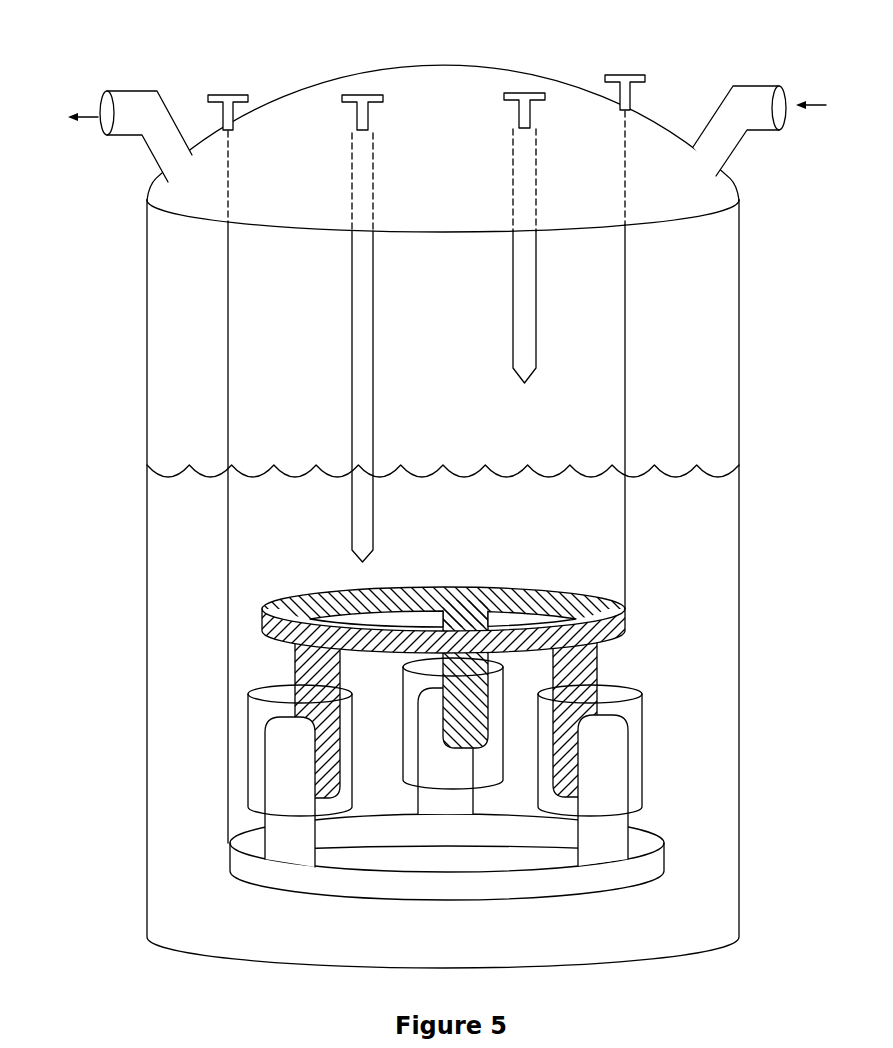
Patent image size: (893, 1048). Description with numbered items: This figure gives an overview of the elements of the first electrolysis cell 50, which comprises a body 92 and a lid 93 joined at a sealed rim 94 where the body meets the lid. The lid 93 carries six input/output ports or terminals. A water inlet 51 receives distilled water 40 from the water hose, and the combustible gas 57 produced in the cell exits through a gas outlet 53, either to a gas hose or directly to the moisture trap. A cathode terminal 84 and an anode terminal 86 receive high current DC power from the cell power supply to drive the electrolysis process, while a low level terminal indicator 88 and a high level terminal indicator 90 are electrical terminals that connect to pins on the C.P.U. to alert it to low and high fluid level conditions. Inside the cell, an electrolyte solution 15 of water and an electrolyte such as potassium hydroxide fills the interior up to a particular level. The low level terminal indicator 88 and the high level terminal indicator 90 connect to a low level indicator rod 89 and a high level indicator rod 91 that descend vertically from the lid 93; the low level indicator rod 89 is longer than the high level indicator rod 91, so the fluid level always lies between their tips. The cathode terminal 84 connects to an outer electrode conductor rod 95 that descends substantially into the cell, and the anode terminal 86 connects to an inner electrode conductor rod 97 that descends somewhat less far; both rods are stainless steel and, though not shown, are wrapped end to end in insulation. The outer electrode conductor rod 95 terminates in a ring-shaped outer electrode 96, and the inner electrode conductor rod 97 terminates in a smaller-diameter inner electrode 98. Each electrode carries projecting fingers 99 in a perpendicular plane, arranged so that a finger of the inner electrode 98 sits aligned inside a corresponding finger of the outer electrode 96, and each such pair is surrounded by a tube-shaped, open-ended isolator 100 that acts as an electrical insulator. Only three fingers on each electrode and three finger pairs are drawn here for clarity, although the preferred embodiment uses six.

The electrolyte solution 15 is at (702, 495).
The distilled water 40 is at (824, 105).
The first electrolysis cell 50 is at (111, 599).
The water inlet 51 is at (752, 86).
The gas outlet 53 is at (156, 90).
The gas 57 is at (70, 118).
The cathode terminal 84 is at (228, 94).
The anode terminal 86 is at (625, 74).
The low level terminal indicator 88 is at (362, 94).
The low level indicator rod 89 is at (373, 537).
The high level terminal indicator 90 is at (524, 92).
The high level indicator rod 91 is at (536, 319).
The body 92 is at (147, 722).
The lid 93 is at (205, 137).
The head flange 94 is at (197, 218).
The outer electrode conductor rod 95 is at (227, 368).
The outer electrode 96 is at (664, 857).
The inner electrode conductor rod 97 is at (625, 258).
The inner electrode 98 is at (625, 617).
The fingers 99 is at (628, 740).
The isolators 100 is at (642, 707).